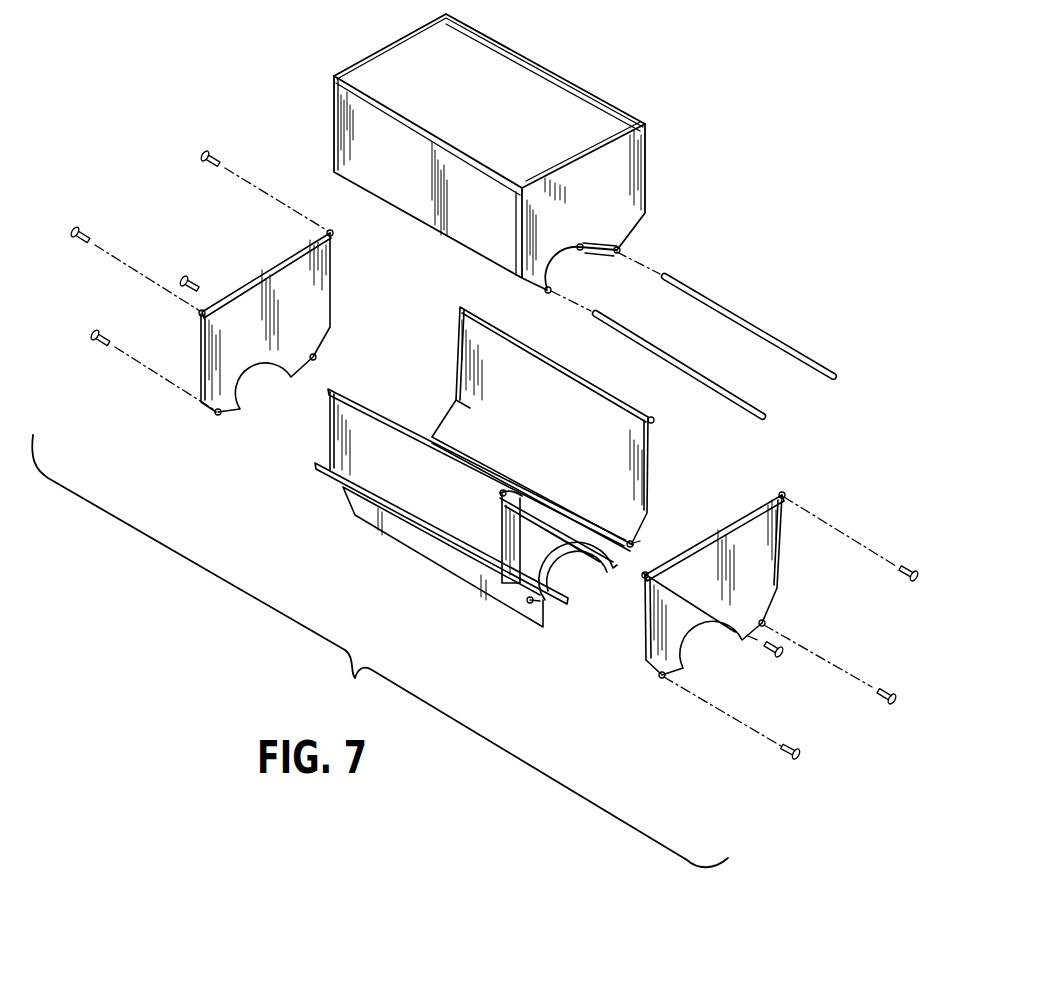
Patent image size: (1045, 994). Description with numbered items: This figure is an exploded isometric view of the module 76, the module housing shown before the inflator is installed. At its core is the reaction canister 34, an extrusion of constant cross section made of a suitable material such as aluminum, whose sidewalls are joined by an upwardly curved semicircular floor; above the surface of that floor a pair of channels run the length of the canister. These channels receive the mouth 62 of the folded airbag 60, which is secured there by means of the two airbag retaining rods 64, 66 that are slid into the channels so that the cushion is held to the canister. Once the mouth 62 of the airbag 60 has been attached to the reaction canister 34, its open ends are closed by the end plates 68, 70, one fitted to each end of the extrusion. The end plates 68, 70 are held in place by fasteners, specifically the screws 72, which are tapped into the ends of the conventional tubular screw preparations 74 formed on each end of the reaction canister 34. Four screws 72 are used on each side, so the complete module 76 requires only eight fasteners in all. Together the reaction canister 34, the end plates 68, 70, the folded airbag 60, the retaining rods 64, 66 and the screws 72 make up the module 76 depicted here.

The reaction canister 34 is at (338, 497).
The airbag 60 is at (569, 86).
The mouth 62 is at (580, 247).
The rod 64 is at (688, 364).
The rod 66 is at (721, 305).
The end plate 68 is at (226, 339).
The end plate 70 is at (777, 540).
The screws 72 is at (125, 198).
The tubular screw preparations 74 is at (499, 494).
The module 76 is at (702, 233).